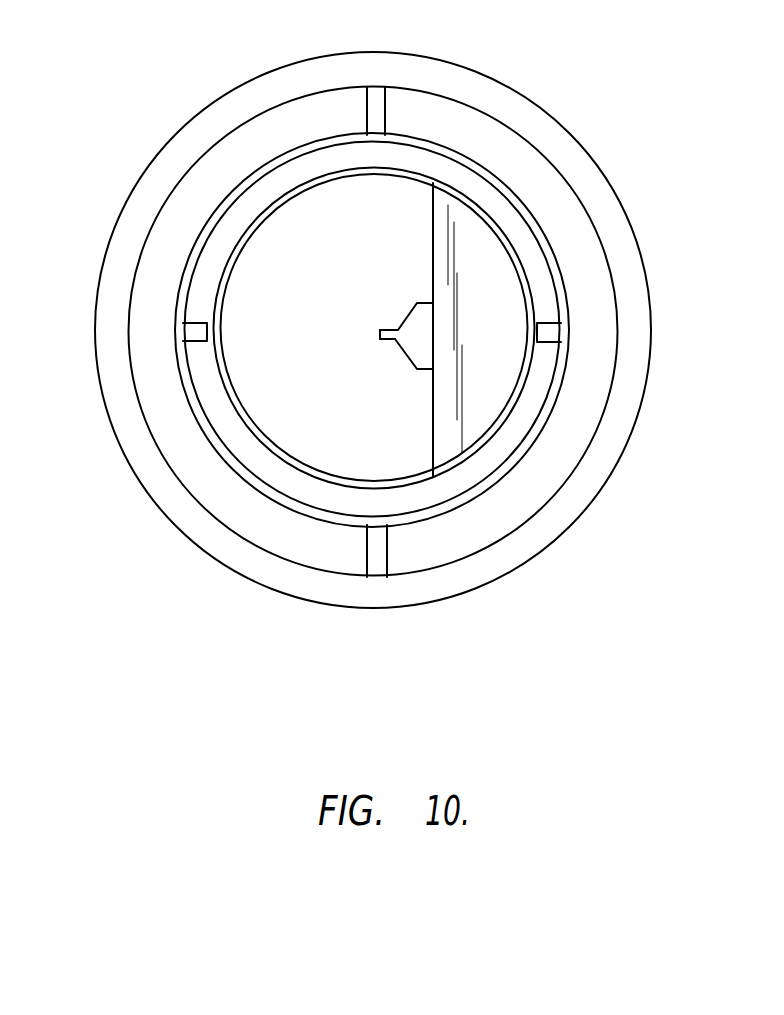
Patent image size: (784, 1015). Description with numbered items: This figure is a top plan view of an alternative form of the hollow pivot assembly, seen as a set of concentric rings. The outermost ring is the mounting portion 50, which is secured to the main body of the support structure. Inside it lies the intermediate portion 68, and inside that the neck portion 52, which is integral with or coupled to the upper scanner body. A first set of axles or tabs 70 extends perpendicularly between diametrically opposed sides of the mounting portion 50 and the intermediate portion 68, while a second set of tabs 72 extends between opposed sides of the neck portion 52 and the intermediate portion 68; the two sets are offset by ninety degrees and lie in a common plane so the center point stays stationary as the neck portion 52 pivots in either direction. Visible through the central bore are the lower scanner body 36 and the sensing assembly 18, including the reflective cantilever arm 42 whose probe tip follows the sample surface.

The sensing assembly 18 is at (394, 342).
The lower scanner body 36 is at (433, 228).
The cantilever arm 42 is at (390, 327).
The mounting portion 50 is at (602, 172).
The neck portion 52 is at (262, 445).
The intermediate portion 68 is at (528, 462).
The first set of tabs 70 is at (387, 112).
The second set of tabs 72 is at (197, 341).